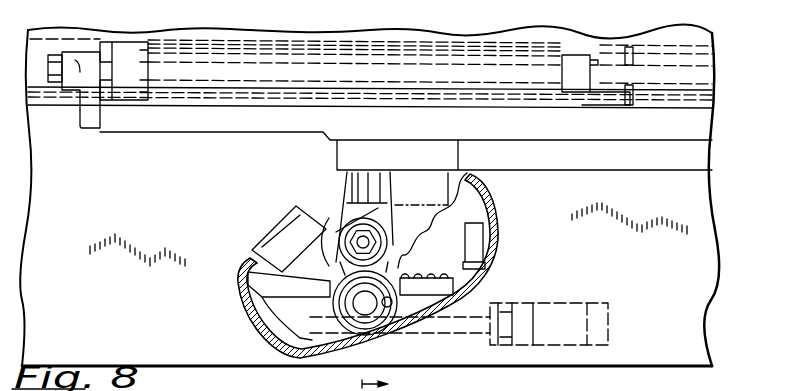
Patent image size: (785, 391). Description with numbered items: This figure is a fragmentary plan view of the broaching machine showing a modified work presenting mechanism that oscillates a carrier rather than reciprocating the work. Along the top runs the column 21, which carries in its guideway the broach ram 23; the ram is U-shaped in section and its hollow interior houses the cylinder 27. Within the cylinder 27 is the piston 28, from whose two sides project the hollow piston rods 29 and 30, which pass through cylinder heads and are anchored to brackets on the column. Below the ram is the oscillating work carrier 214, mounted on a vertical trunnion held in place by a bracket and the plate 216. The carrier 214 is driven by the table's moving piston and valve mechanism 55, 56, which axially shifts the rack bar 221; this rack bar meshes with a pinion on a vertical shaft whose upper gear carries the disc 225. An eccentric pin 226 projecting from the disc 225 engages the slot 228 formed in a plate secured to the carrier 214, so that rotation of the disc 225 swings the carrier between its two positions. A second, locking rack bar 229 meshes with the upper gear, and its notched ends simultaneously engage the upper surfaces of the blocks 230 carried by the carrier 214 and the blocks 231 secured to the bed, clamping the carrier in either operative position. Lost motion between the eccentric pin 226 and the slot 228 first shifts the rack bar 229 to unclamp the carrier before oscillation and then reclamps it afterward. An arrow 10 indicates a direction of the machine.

The direction arrow 10 is at (388, 383).
The column 21 is at (706, 338).
The broach ram 23 is at (168, 128).
The cylinder 27 is at (435, 42).
The piston 28 is at (572, 60).
The piston rod 29 is at (207, 60).
The piston rod 30 is at (680, 50).
The table moving piston 55 is at (522, 320).
The valve mechanism 56 is at (566, 304).
The carrier 214 is at (497, 231).
The plate 216 is at (347, 202).
The rack bar 221 is at (457, 328).
The disc 225 is at (340, 303).
The eccentric pin 226 is at (395, 300).
The slot 228 is at (452, 246).
The rack bar 229 is at (450, 258).
The blocks 230 is at (290, 316).
The blocks 231 is at (293, 287).